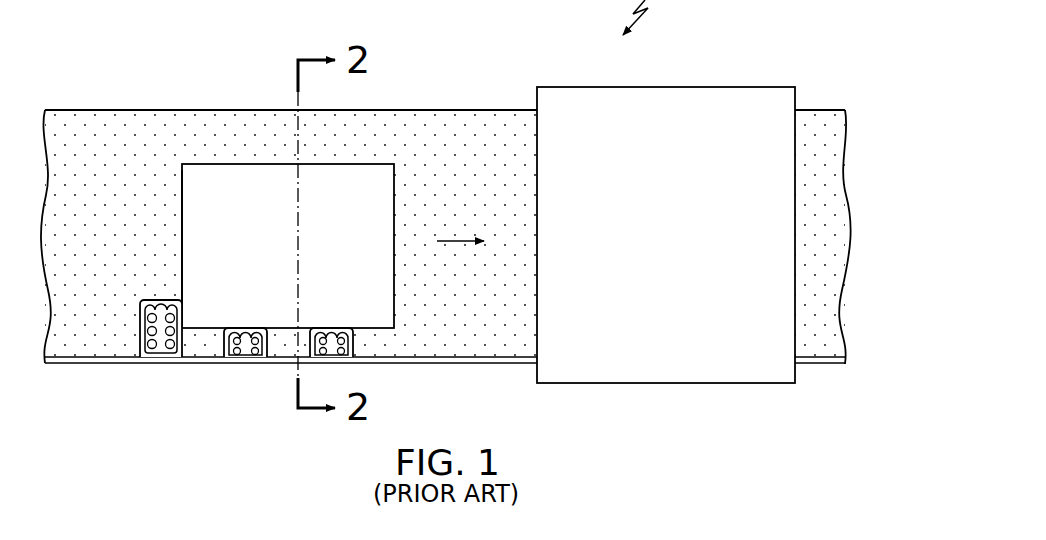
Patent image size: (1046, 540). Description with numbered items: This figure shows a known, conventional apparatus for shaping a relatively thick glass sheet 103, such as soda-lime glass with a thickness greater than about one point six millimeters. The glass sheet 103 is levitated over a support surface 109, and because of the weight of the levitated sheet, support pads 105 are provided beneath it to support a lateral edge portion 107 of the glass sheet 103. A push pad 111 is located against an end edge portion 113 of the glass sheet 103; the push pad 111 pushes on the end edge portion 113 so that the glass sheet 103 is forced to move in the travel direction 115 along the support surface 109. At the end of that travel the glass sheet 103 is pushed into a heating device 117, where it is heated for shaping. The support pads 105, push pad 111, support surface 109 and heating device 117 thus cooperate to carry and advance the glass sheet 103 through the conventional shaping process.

The glass sheet 103 is at (222, 164).
The support pads 105 is at (245, 368).
The lateral edge portion 107 is at (377, 328).
The support surface 109 is at (483, 151).
The push pad 111 is at (152, 368).
The end edge portion 113 is at (182, 220).
The travel direction 115 is at (458, 241).
The heating device 117 is at (666, 87).